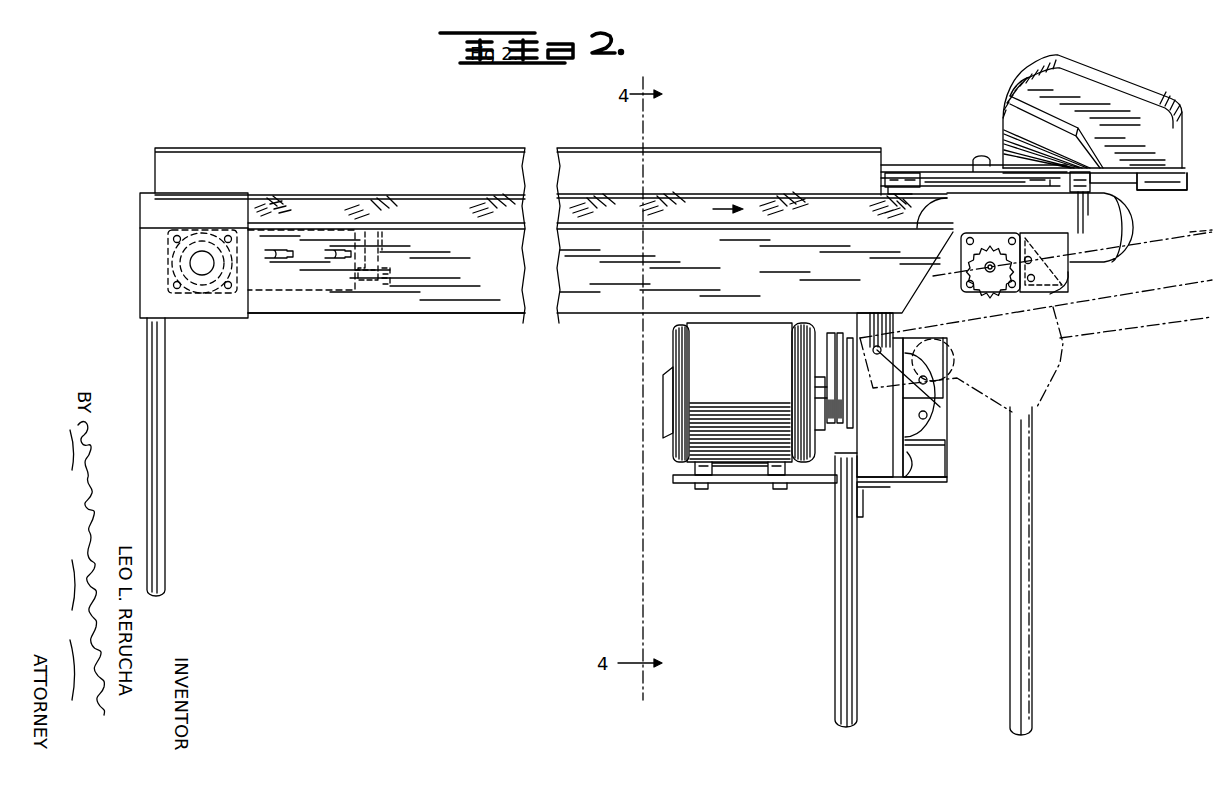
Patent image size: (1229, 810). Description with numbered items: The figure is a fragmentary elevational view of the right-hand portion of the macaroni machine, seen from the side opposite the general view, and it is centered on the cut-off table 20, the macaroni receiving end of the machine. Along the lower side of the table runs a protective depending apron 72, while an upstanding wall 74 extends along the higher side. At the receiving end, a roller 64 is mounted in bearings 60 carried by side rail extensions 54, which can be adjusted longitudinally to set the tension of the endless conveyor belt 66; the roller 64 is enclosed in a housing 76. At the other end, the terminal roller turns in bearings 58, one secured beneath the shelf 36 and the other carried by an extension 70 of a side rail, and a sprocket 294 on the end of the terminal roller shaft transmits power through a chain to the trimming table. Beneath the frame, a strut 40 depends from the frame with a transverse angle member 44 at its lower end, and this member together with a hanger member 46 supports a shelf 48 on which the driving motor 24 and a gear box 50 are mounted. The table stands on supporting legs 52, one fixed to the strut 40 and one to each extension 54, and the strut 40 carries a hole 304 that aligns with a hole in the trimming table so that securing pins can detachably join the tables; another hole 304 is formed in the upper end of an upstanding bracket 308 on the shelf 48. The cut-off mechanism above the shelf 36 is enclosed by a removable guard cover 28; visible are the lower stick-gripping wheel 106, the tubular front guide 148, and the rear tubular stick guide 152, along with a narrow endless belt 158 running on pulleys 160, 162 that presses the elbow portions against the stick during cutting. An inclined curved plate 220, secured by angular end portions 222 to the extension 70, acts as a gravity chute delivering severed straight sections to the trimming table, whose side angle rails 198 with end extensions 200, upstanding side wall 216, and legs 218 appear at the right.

The cut-off table 20 is at (365, 143).
The driving motor 24 is at (742, 466).
The guard cover 28 is at (1120, 82).
The shelf 36 is at (937, 166).
The frame supporting strut 40 is at (888, 470).
The transverse angle member 44 is at (861, 512).
The hanger member 46 is at (672, 325).
The shelf 48 is at (832, 483).
The gear box 50 is at (947, 452).
The supporting leg 52 is at (167, 496).
The side rail extension 54 is at (313, 292).
The bearing 58 is at (1000, 222).
The bearing 60 is at (210, 296).
The roller 64 is at (213, 242).
The endless conveyor belt 66 is at (400, 228).
The extension 70 is at (1048, 240).
The apron 72 is at (455, 313).
The upstanding wall 74 is at (758, 150).
The housing 76 is at (142, 195).
The lower wheel 106 is at (1135, 224).
The tubular front guide 148 is at (1085, 192).
The rear tubular stick guide 152 is at (1152, 190).
The narrow endless belt 158 is at (930, 182).
The pulley 160 is at (1075, 190).
The pulley 162 is at (895, 166).
The side angle rail 198 is at (1113, 338).
The end extension 200 is at (1053, 380).
The upstanding side wall 216 is at (1187, 236).
The leg 218 is at (1033, 627).
The inclined curved plate 220 is at (1090, 284).
The angular end portion 222 is at (1040, 300).
The sprocket 294 is at (992, 288).
The hole 304 is at (930, 398).
The upstanding bracket 308 is at (907, 460).